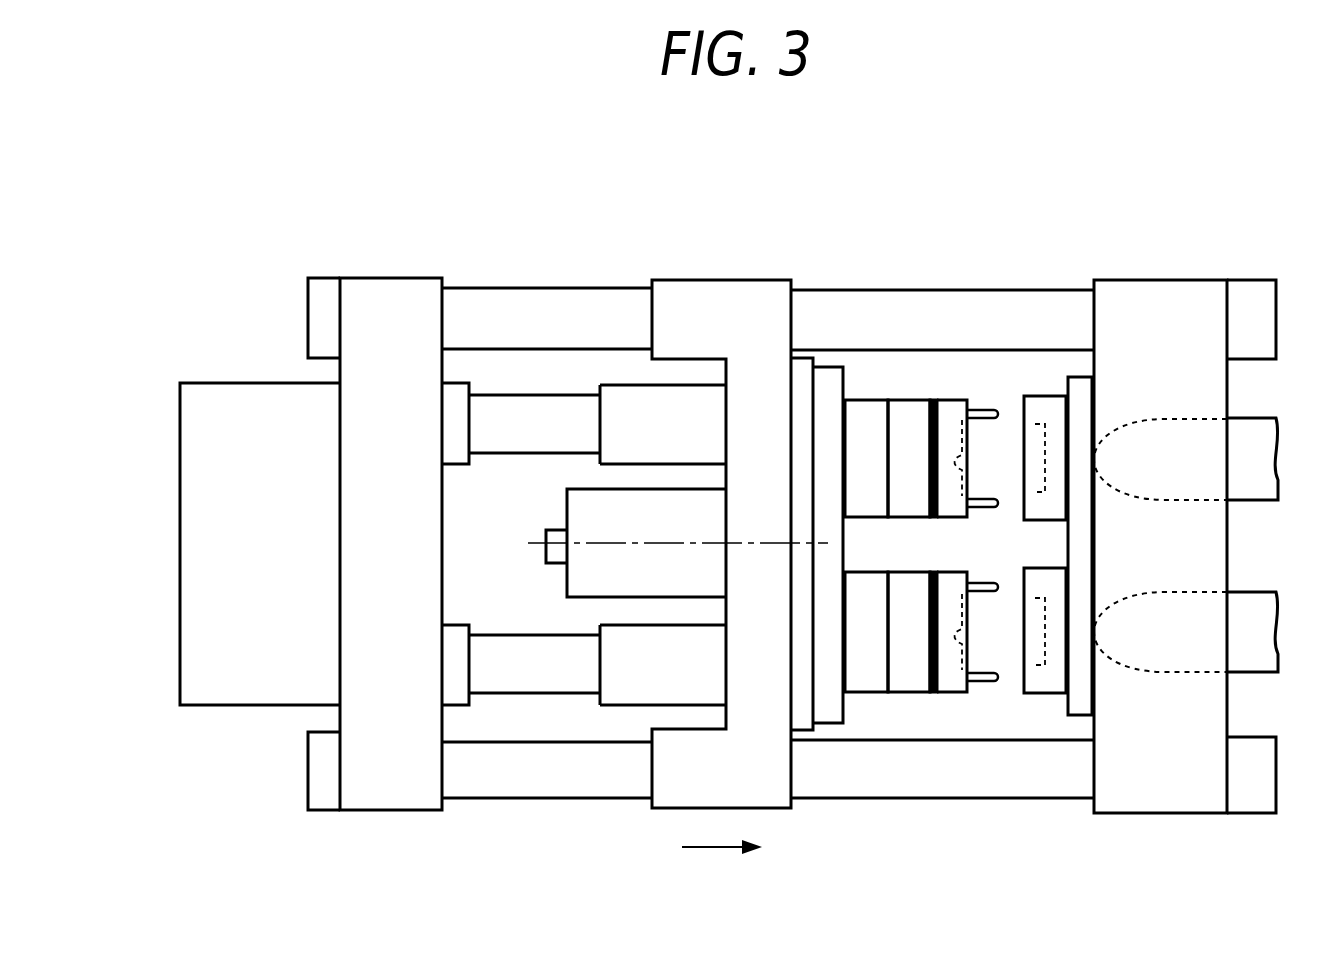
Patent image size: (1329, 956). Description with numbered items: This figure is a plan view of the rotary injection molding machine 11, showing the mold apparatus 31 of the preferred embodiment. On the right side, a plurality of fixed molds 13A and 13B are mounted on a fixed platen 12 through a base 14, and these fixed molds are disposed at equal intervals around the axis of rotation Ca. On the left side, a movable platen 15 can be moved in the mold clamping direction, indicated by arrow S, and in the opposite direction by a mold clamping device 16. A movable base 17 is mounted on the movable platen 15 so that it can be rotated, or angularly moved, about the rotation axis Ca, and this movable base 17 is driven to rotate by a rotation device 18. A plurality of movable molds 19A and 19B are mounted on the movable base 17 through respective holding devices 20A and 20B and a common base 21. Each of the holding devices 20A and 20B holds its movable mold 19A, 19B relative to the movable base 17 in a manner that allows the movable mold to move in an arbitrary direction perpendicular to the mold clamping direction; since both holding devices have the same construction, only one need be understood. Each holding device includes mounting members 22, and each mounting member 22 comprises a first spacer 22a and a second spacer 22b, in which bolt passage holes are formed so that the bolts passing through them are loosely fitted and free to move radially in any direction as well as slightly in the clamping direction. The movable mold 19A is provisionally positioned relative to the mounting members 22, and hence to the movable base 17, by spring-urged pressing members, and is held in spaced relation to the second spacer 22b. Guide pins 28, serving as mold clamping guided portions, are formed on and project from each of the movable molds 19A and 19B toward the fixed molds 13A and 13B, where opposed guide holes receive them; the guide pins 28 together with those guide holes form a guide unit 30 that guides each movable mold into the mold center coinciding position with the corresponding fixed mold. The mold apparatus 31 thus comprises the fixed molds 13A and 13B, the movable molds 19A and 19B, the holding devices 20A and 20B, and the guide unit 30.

The rotary injection molding machine 11 is at (893, 188).
The fixed platen 12 is at (1165, 280).
The fixed mold 13A is at (1082, 716).
The fixed mold 13B is at (1041, 395).
The base 14 is at (1080, 377).
The movable platen 15 is at (794, 320).
The mold clamping device 16 is at (237, 383).
The movable base 17 is at (797, 735).
The rotation device 18 is at (570, 487).
The movable mold 19A is at (945, 695).
The movable mold 19B is at (960, 378).
The holding device 20A is at (930, 741).
The holding device 20B is at (925, 379).
The common base 21 is at (828, 725).
The mounting member 22 is at (862, 700).
The first spacer 22a is at (862, 571).
The second spacer 22b is at (936, 553).
The guide pins 28 is at (972, 411).
The guide unit 30 is at (995, 714).
The mold apparatus 31 is at (948, 398).
The axis of rotation Ca is at (596, 544).
The mold clamping direction S is at (714, 849).